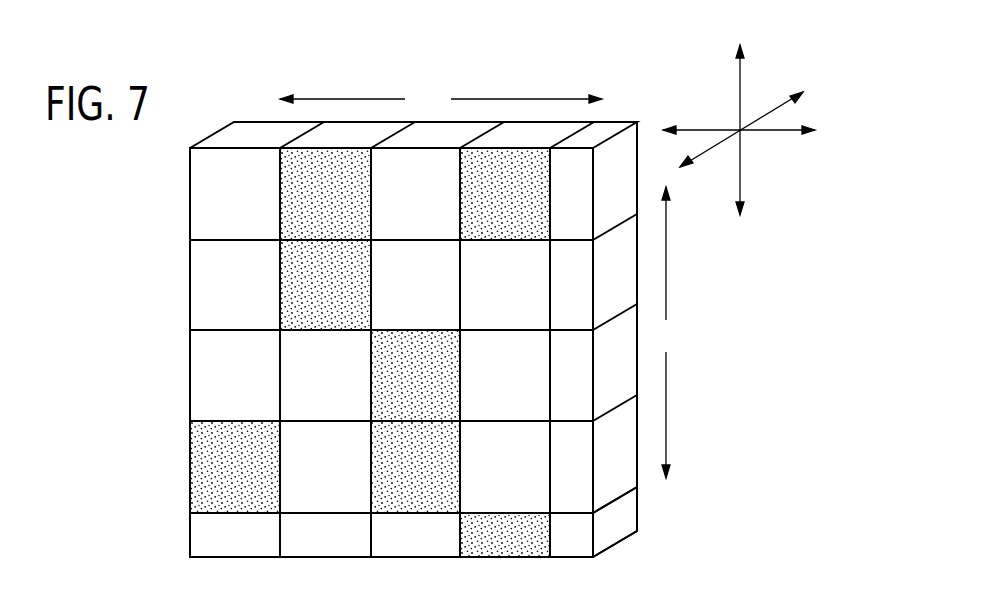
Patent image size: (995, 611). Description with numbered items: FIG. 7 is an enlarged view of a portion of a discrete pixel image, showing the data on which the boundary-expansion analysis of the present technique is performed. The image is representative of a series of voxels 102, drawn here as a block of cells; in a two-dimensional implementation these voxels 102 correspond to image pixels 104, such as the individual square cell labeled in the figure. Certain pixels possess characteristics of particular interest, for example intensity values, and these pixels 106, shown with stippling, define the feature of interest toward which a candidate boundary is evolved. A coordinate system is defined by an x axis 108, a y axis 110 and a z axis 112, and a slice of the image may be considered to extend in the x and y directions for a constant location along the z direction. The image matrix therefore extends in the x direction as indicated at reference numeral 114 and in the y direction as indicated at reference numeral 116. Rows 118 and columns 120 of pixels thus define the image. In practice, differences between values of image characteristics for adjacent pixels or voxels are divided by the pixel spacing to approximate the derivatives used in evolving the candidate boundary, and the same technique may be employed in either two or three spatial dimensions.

The voxels 102 is at (603, 133).
The image pixels 104 is at (210, 460).
The pixels of the feature of interest 106 is at (290, 268).
The x axis 108 is at (762, 135).
The y axis 110 is at (742, 176).
The z axis 112 is at (757, 118).
The x-direction extent of the image matrix 114 is at (441, 100).
The y-direction extent of the image matrix 116 is at (667, 332).
The rows of pixels 118 is at (582, 497).
The columns of pixels 120 is at (240, 552).